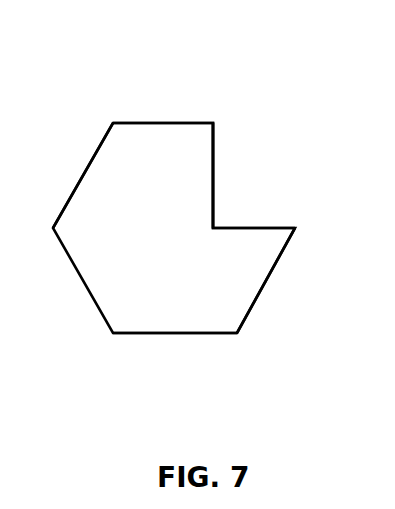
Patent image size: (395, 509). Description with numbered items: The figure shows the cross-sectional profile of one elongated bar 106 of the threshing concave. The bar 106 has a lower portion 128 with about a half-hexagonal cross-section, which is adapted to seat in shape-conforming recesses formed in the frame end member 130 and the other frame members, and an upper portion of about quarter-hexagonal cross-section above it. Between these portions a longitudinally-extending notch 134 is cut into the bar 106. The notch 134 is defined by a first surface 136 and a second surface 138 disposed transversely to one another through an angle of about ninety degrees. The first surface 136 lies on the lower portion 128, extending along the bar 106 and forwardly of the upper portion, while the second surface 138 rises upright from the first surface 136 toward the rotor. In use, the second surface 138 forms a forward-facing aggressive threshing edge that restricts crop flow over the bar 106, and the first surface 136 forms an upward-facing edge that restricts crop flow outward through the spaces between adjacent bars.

The elongated bar 106 is at (214, 55).
The lower portion 128 is at (192, 310).
The frame end member 130 is at (112, 156).
The longitudinally-extending notch 134 is at (250, 208).
The first surface 136 is at (283, 225).
The second surface 138 is at (213, 133).